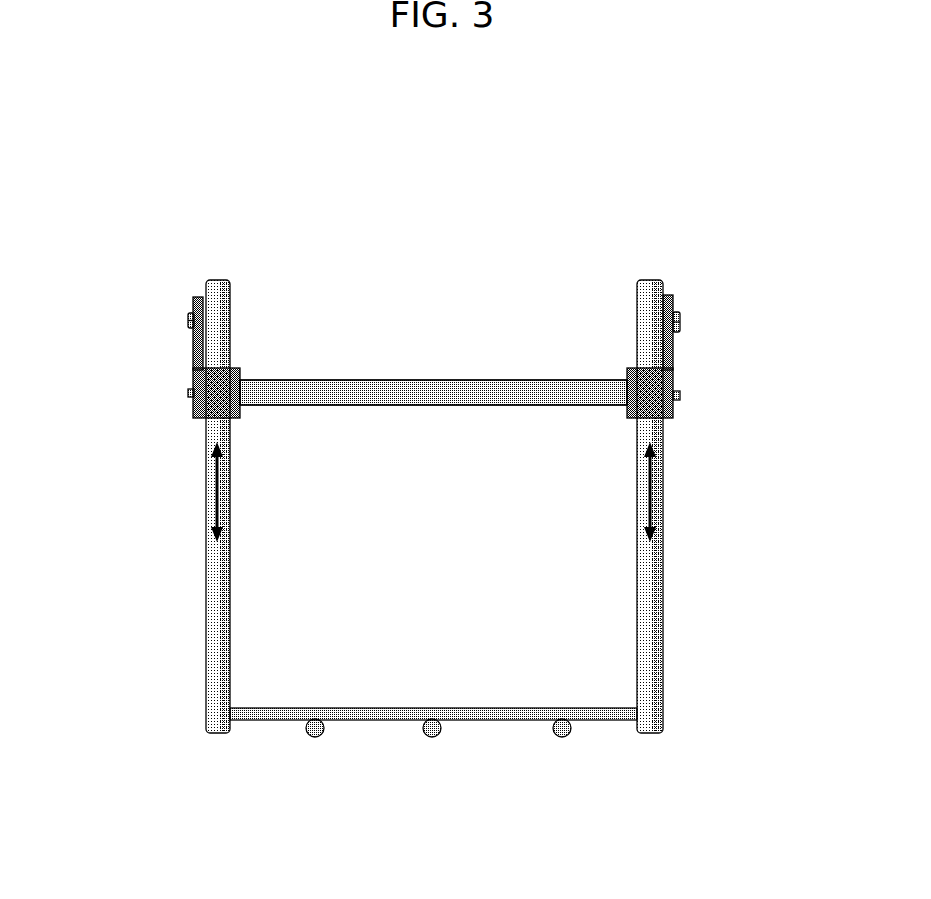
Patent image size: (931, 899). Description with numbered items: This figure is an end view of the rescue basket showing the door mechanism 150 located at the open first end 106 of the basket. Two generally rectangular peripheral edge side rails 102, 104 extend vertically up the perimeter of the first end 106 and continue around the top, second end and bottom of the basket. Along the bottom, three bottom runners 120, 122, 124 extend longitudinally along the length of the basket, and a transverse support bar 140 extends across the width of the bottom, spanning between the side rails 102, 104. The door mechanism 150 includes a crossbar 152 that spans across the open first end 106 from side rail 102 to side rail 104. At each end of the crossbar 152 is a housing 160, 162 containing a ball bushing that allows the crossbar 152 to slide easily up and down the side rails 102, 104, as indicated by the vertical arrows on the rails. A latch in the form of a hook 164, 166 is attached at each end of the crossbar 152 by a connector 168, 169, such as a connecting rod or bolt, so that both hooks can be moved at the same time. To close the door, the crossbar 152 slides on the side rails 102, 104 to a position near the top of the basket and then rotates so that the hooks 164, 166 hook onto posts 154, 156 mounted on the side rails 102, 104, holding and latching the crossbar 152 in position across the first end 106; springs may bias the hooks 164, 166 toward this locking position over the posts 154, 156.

The side rail 102 is at (215, 585).
The side rail 104 is at (647, 585).
The first end 106 is at (436, 654).
The bottom runner 120 is at (312, 740).
The bottom runner 122 is at (432, 738).
The bottom runner 124 is at (564, 738).
The transverse support bar 140 is at (612, 712).
The door mechanism 150 is at (433, 341).
The crossbar 152 is at (412, 393).
The post 154 is at (188, 322).
The post 156 is at (680, 320).
The housing 160 is at (213, 383).
The housing 162 is at (647, 378).
The hook 164 is at (192, 297).
The hook 166 is at (673, 297).
The connector 168 is at (190, 395).
The connector 169 is at (678, 395).